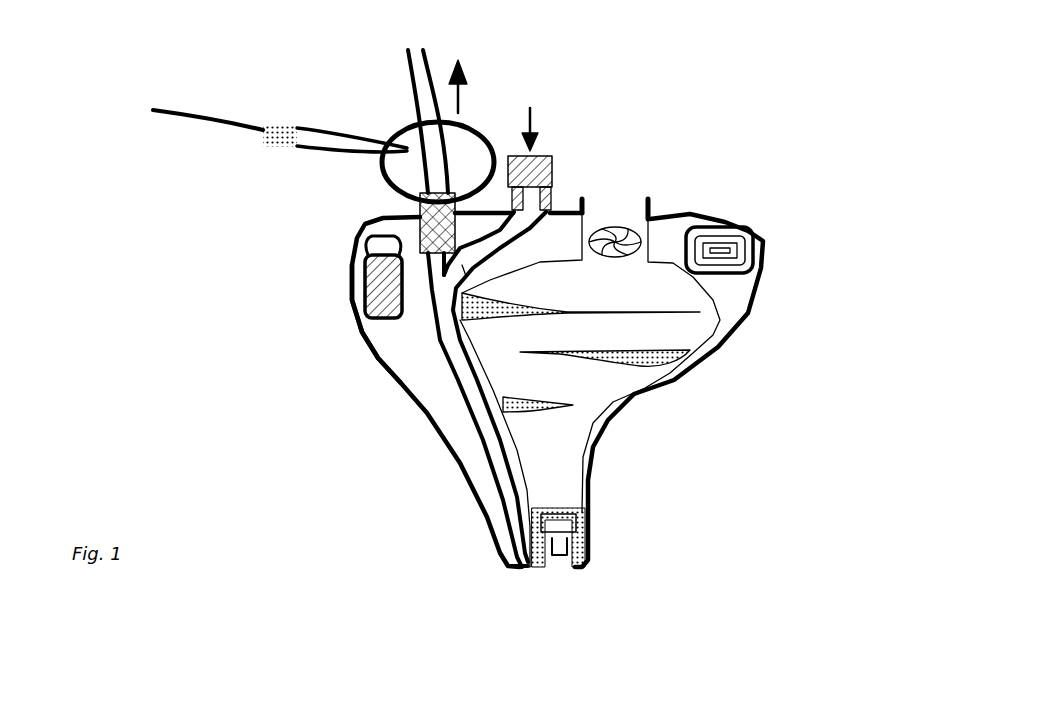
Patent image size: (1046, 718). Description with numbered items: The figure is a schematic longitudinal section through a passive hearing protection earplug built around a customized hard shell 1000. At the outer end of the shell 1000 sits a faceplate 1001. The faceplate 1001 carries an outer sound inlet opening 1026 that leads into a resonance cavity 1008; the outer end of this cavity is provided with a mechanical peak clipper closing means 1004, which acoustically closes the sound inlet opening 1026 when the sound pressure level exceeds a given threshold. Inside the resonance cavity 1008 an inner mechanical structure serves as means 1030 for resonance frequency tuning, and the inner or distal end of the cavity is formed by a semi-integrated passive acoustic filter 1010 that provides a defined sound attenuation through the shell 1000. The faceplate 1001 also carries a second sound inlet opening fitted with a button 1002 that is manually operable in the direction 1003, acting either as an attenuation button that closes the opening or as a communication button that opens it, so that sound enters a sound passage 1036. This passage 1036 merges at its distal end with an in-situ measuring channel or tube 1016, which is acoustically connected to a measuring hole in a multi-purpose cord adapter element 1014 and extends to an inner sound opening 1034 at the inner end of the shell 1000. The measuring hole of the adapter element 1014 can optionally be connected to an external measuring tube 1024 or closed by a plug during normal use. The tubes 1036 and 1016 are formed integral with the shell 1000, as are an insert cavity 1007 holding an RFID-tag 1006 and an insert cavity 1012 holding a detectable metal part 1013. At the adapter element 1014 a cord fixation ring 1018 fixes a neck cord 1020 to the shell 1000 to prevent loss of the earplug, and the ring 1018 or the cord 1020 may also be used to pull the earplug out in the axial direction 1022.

The customized hard shell 1000 is at (566, 390).
The faceplate 1001 is at (639, 174).
The button 1002 is at (606, 152).
The direction of button operation 1003 is at (584, 123).
The mechanical peak clipper closing means 1004 is at (700, 204).
The RFID-tag 1006 is at (798, 236).
The insert cavity 1007 is at (796, 225).
The resonance cavity 1008 is at (678, 390).
The acoustic filter 1010 is at (664, 509).
The insert cavity 1012 is at (292, 323).
The detectable metal part 1013 is at (293, 277).
The adapter element 1014 is at (368, 410).
The measurement channel 1016 is at (432, 387).
The cord fixation ring 1018 is at (349, 177).
The neck cord 1020 is at (280, 102).
The axial direction 1022 is at (540, 64).
The external measuring tube 1024 is at (350, 131).
The outer sound inlet opening 1026 is at (656, 192).
The means for resonance frequency tuning 1030 is at (654, 352).
The inner sound opening 1034 is at (419, 547).
The sound passage 1036 is at (340, 363).